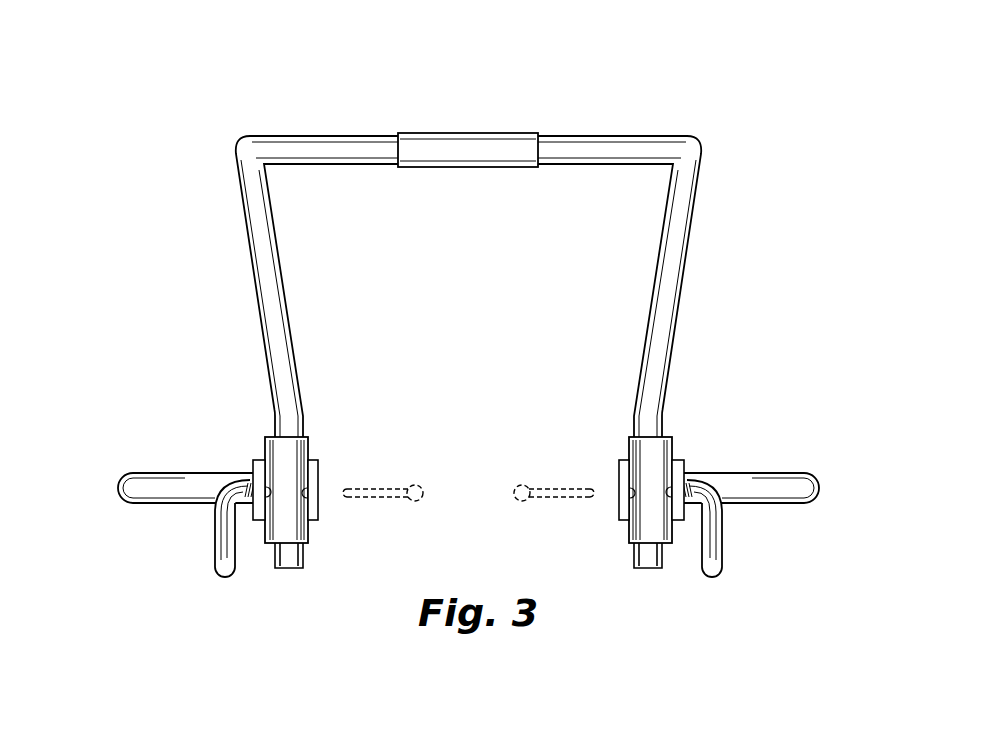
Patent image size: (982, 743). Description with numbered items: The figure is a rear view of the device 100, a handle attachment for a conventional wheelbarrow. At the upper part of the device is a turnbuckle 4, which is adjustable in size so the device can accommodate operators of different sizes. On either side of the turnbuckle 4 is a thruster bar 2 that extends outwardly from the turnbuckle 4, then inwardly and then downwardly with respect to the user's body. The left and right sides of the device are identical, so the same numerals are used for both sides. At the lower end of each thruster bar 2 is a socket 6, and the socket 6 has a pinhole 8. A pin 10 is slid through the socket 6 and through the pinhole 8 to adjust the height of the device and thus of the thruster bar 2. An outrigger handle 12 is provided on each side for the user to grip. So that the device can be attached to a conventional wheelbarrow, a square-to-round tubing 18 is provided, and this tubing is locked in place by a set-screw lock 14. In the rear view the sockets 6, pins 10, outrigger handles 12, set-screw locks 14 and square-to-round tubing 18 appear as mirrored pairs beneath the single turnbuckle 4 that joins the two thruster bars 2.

The handle assembly 100 is at (216, 94).
The thruster bar 2 is at (336, 136).
The turnbuckle 4 is at (463, 133).
The socket 6 is at (310, 532).
The pinhole 8 is at (320, 500).
The pin 10 is at (392, 486).
The outrigger handle 12 is at (120, 477).
The set-screw lock 14 is at (215, 561).
The square-to-round tubing 18 is at (322, 467).